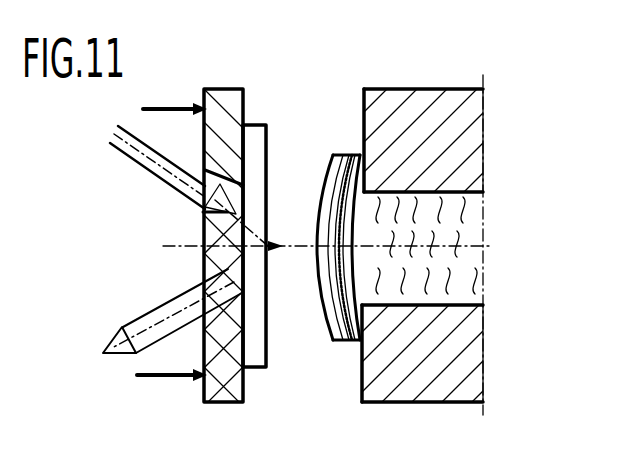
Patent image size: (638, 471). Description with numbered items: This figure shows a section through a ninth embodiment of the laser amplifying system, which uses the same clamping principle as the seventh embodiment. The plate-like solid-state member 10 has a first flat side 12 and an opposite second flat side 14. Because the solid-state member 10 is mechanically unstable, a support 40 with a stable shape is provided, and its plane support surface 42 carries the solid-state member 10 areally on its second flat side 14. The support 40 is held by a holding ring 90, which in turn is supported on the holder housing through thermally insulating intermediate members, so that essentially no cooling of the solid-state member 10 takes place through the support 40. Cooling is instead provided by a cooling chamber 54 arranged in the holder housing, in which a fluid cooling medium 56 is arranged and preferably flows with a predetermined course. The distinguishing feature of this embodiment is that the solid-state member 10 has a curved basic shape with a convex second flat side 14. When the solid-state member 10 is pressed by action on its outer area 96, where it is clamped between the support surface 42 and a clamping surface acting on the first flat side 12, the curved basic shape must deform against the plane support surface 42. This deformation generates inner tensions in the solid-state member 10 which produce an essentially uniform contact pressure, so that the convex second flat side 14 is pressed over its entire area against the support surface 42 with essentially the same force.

The solid-state member 10 is at (357, 249).
The outer area 96 is at (336, 155).
The cooling chamber 54 is at (447, 223).
The fluid cooling medium 56 is at (440, 276).
The holding ring 90 is at (218, 338).
The support 40 is at (203, 402).
The support surface 42 is at (254, 320).
The second flat side 14 is at (327, 318).
The first flat side 12 is at (357, 312).